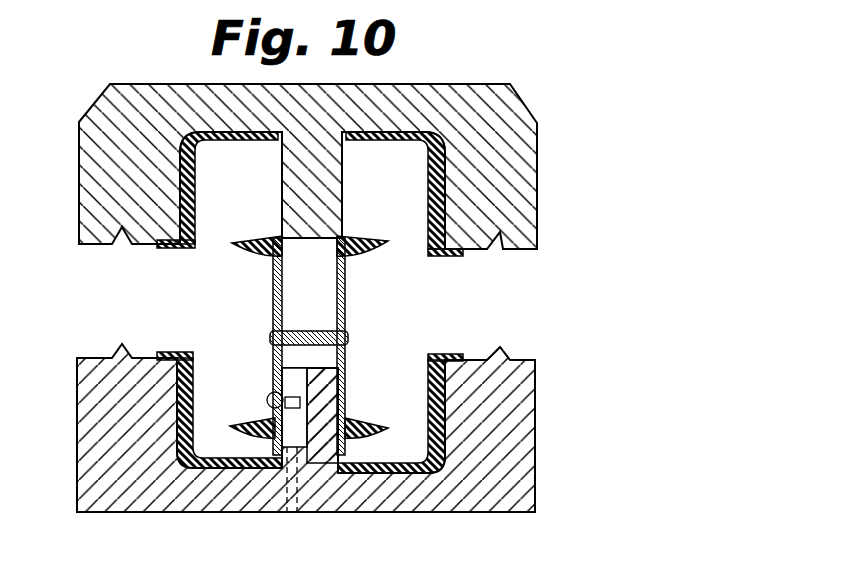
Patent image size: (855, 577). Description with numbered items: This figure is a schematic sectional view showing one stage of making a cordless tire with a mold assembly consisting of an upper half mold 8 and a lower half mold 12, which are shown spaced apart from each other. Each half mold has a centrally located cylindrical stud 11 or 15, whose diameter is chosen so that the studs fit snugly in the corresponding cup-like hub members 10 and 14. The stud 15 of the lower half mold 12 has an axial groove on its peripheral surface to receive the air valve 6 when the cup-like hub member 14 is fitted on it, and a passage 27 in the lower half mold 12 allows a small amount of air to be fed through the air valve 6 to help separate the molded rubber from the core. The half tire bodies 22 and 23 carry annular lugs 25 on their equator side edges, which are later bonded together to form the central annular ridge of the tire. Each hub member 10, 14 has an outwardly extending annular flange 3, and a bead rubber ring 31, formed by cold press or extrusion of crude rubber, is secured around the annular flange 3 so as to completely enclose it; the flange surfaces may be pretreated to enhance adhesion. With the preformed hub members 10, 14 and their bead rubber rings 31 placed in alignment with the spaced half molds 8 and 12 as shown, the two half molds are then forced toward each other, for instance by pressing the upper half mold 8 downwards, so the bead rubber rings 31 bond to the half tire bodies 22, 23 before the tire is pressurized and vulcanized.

The upper half mold 8 is at (95, 148).
The lower half mold 12 is at (133, 493).
The cylindrical stud 11 is at (300, 183).
The annular lug 25 is at (175, 356).
The half tire body 22 is at (427, 160).
The half tire body 23 is at (438, 358).
The cylindrical stud 15 is at (323, 408).
The passage 27 is at (291, 512).
The air valve 6 is at (275, 392).
The cup-like hub member 10 is at (345, 298).
The cup-like hub member 14 is at (347, 368).
The annular flange 3 is at (357, 250).
The bead rubber ring 31 is at (248, 250).